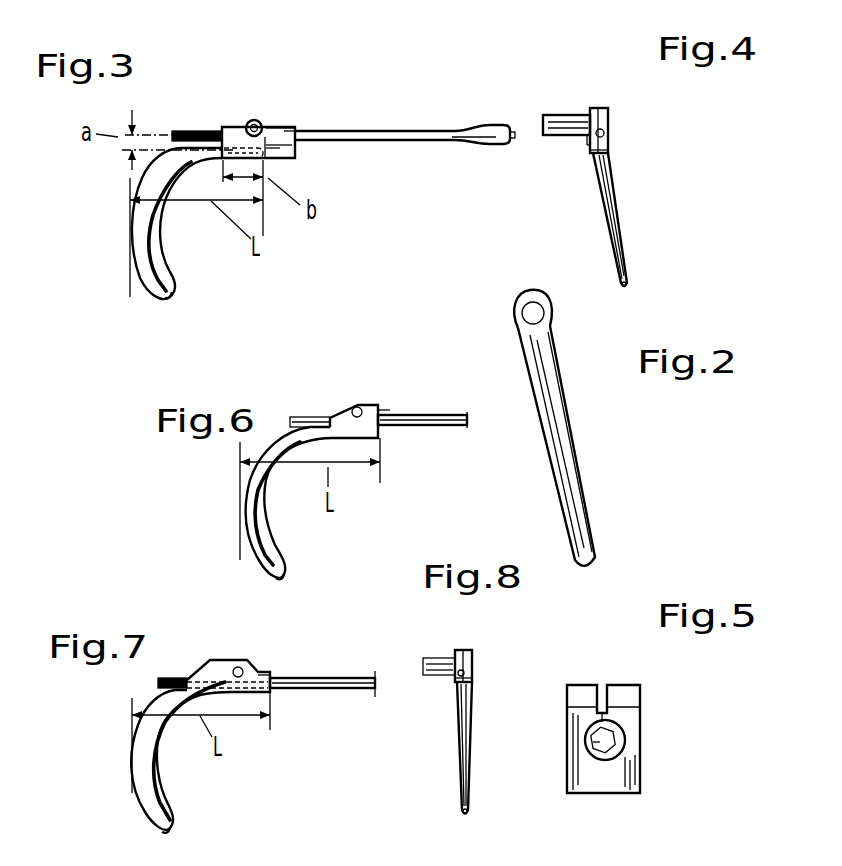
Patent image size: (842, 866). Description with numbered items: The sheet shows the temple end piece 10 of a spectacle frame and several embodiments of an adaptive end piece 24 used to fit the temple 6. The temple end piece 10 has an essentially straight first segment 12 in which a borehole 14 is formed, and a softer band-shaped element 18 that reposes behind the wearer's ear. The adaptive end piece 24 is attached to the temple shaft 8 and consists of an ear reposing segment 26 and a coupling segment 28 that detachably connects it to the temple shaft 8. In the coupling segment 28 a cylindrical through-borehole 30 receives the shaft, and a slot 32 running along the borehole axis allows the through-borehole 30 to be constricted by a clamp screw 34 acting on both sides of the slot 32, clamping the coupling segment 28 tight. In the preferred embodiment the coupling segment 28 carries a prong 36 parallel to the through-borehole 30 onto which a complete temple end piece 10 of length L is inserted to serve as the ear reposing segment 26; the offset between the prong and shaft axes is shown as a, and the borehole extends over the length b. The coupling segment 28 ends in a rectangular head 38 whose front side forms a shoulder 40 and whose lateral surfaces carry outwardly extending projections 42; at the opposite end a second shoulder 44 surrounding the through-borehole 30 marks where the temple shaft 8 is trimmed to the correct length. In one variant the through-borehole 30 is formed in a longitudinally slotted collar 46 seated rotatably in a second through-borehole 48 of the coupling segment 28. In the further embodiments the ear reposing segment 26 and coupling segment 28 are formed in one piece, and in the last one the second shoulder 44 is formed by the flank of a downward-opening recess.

In FIG. 3, the temple 6 is at (418, 123).
In FIG. 3, the temple shaft 8 is at (370, 132).
In FIG. 6, the temple shaft 8 is at (457, 428).
In FIG. 7, the temple shaft 8 is at (370, 698).
In FIG. 2, the temple end piece 10 is at (588, 450).
In FIG. 2, the first segment 12 is at (531, 305).
In FIG. 2, the borehole 14 is at (532, 317).
In FIG. 2, the band-shaped element 18 is at (551, 407).
In FIG. 3, the adaptive end piece 24 is at (121, 229).
In FIG. 4, the adaptive end piece 24 is at (599, 233).
In FIG. 6, the adaptive end piece 24 is at (239, 498).
In FIG. 7, the adaptive end piece 24 is at (131, 772).
In FIG. 8, the adaptive end piece 24 is at (464, 748).
In FIG. 3, the ear reposing segment 26 is at (169, 299).
In FIG. 4, the ear reposing segment 26 is at (628, 284).
In FIG. 6, the ear reposing segment 26 is at (281, 580).
In FIG. 7, the ear reposing segment 26 is at (175, 821).
In FIG. 8, the ear reposing segment 26 is at (463, 815).
In FIG. 3, the coupling segment 28 is at (233, 112).
In FIG. 4, the coupling segment 28 is at (603, 101).
In FIG. 6, the coupling segment 28 is at (342, 394).
In FIG. 7, the coupling segment 28 is at (206, 661).
In FIG. 8, the coupling segment 28 is at (447, 666).
In FIG. 5, the coupling segment 28 is at (648, 688).
In FIG. 4, the through-borehole 30 is at (610, 137).
In FIG. 8, the through-borehole 30 is at (473, 673).
In FIG. 5, the through-borehole 30 is at (620, 733).
In FIG. 5, the slot 32 is at (600, 690).
In FIG. 3, the clamp screw 34 is at (251, 119).
In FIG. 4, the clamp screw 34 is at (560, 130).
In FIG. 6, the clamp screw 34 is at (362, 409).
In FIG. 7, the clamp screw 34 is at (238, 667).
In FIG. 3, the prong 36 is at (269, 126).
In FIG. 3, the head 38 is at (301, 124).
In FIG. 6, the head 38 is at (394, 408).
In FIG. 7, the head 38 is at (278, 662).
In FIG. 3, the shoulder 40 is at (293, 146).
In FIG. 4, the shoulder 40 is at (595, 154).
In FIG. 6, the shoulder 40 is at (380, 432).
In FIG. 7, the shoulder 40 is at (272, 688).
In FIG. 8, the shoulder 40 is at (458, 684).
In FIG. 3, the projections 42 is at (297, 132).
In FIG. 4, the projections 42 is at (585, 122).
In FIG. 6, the projections 42 is at (390, 409).
In FIG. 7, the projections 42 is at (258, 675).
In FIG. 8, the projections 42 is at (444, 659).
In FIG. 3, the second shoulder 44 is at (220, 137).
In FIG. 6, the second shoulder 44 is at (333, 417).
In FIG. 7, the second shoulder 44 is at (218, 698).
In FIG. 5, the collar 46 is at (623, 753).
In FIG. 5, the second through-borehole 48 is at (592, 742).